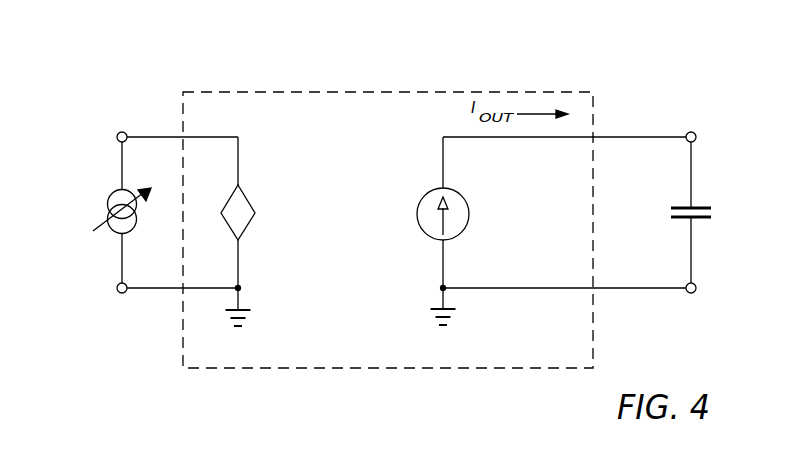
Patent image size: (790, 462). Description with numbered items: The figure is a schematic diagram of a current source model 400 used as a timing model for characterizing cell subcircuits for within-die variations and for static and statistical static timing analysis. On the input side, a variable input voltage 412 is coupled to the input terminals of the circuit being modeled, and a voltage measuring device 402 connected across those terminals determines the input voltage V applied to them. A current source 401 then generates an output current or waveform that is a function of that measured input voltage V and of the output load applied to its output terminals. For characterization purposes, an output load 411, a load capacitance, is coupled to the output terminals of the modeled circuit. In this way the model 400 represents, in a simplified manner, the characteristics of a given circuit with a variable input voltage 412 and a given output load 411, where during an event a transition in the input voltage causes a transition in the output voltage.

The current source model 400 is at (128, 90).
The variable input voltage 412 is at (110, 197).
The voltage measuring device 402 is at (250, 204).
The current source 401 is at (434, 192).
The output load 411 is at (678, 207).